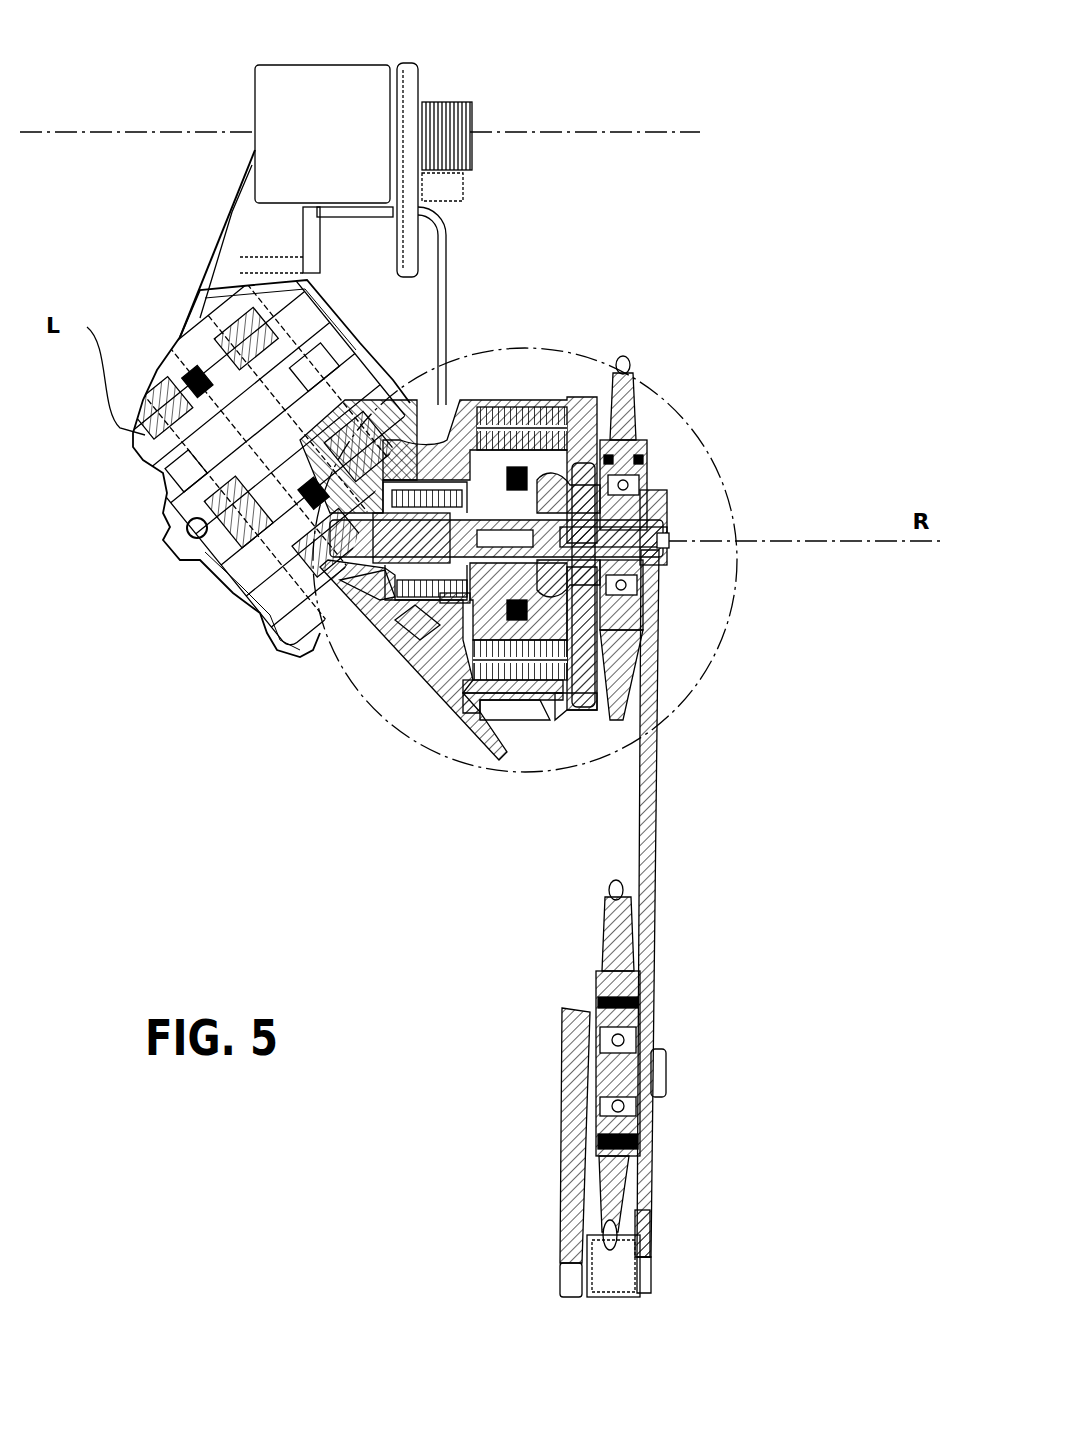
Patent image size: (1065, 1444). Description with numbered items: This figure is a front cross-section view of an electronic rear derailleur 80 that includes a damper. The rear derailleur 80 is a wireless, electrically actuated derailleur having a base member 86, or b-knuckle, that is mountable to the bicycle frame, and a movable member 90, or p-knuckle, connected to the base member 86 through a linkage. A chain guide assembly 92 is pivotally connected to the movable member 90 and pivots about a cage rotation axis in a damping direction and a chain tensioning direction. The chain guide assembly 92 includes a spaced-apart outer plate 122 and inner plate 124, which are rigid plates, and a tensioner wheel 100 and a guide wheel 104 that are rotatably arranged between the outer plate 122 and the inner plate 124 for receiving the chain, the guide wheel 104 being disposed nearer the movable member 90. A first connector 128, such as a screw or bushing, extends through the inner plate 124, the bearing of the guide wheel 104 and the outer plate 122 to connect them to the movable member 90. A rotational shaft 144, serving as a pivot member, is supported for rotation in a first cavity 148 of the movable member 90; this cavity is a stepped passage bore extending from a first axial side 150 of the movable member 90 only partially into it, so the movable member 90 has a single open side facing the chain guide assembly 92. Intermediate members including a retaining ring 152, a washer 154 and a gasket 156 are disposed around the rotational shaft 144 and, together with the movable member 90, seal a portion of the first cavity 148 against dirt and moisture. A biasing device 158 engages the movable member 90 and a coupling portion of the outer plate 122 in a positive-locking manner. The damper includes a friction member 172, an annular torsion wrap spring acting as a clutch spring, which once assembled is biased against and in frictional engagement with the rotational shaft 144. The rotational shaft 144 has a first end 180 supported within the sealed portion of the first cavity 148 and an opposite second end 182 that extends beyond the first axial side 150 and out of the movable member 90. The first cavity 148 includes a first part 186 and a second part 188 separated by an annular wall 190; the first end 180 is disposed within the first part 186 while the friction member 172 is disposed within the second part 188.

The rear derailleur 80 is at (702, 330).
The base member 86 is at (315, 110).
The movable member 90 is at (208, 631).
The chain guide assembly 92 is at (699, 518).
The tensioner wheel 100 is at (645, 966).
The guide wheel 104 is at (617, 710).
The outer plate 122 is at (585, 708).
The inner plate 124 is at (648, 880).
The first connector 128 is at (655, 555).
The rotational shaft 144 is at (513, 513).
The first cavity 148 is at (440, 597).
The first axial side 150 is at (557, 695).
The retaining ring 152 is at (540, 705).
The washer 154 is at (525, 660).
The gasket 156 is at (500, 615).
The biasing device 158 is at (545, 488).
The friction member 172 is at (410, 625).
The first end 180 is at (395, 595).
The second end 182 is at (647, 462).
The first part 186 is at (420, 488).
The second part 188 is at (463, 488).
The wall 190 is at (412, 610).